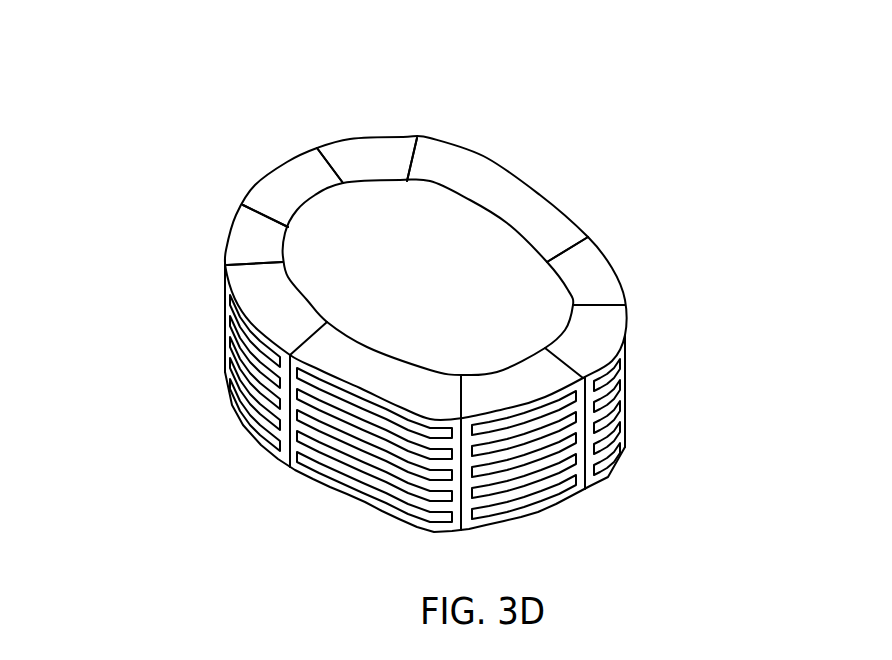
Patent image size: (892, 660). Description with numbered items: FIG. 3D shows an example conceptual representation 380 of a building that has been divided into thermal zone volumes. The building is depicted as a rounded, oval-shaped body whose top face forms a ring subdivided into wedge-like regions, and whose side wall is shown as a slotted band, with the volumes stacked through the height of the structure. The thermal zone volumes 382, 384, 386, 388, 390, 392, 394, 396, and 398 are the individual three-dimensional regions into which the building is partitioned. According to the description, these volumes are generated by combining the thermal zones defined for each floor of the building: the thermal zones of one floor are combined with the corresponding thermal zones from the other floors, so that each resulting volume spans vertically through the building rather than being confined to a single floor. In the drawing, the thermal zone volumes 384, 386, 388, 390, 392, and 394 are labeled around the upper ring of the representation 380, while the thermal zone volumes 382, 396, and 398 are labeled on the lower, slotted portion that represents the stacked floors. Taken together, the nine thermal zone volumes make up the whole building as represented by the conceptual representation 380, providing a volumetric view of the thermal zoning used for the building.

The conceptual representation 380 is at (641, 141).
The thermal zone volume 382 is at (272, 310).
The thermal zone volume 384 is at (227, 247).
The thermal zone volume 386 is at (273, 180).
The thermal zone volume 388 is at (361, 158).
The thermal zone volume 390 is at (488, 180).
The thermal zone volume 392 is at (597, 270).
The thermal zone volume 394 is at (597, 330).
The thermal zone volume 396 is at (510, 395).
The thermal zone volume 398 is at (425, 393).